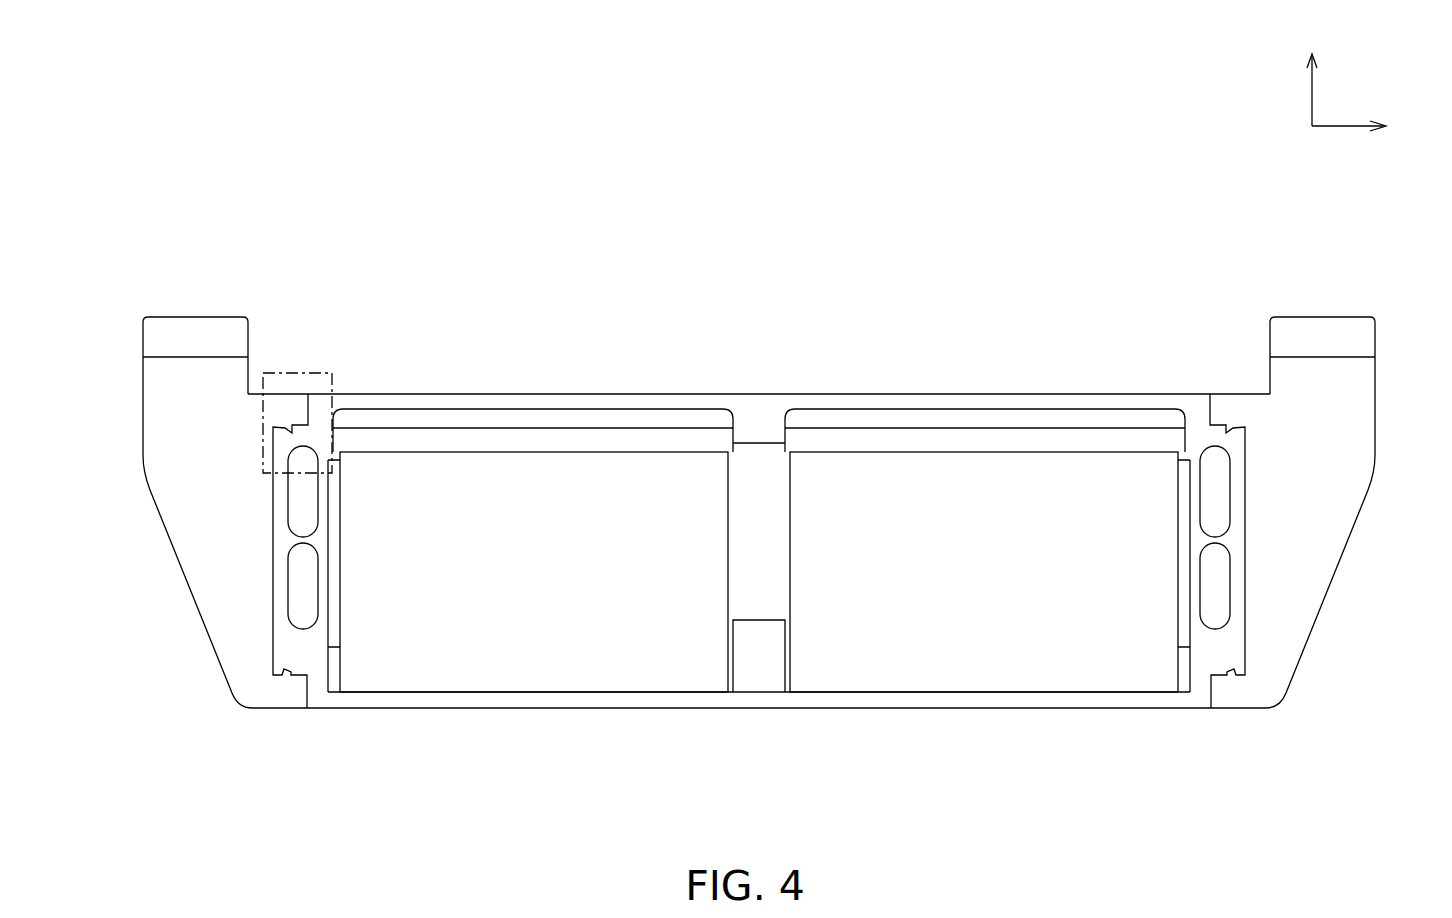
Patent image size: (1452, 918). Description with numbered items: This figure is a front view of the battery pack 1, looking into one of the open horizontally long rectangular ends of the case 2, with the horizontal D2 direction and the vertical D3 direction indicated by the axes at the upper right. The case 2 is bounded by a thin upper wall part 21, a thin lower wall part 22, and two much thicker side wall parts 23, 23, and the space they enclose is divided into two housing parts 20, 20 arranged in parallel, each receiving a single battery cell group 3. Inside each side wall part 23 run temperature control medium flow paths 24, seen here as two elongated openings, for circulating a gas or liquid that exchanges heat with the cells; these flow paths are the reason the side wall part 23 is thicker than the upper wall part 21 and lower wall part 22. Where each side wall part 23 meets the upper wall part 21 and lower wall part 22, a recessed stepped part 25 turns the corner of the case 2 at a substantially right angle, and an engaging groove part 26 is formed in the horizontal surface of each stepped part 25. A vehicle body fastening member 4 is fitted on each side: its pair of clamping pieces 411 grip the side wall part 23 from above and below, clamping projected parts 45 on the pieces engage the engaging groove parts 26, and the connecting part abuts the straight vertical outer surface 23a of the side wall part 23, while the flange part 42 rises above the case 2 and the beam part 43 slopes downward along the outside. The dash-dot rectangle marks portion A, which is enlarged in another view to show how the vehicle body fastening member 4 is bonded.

The battery pack 1 is at (798, 152).
The case 2 is at (762, 364).
The single battery cell group 3 is at (759, 552).
The vehicle body fastening member 4 is at (760, 488).
The housing part 20 is at (553, 408).
The upper wall part 21 is at (955, 393).
The lower wall part 22 is at (858, 709).
The side wall part 23 is at (758, 562).
The outer surface of the side wall part 23a is at (272, 505).
The temperature control medium flow path 24 is at (296, 525).
The stepped part 25 is at (293, 724).
The engaging groove part 26 is at (283, 690).
The flange part 42 is at (142, 365).
The beam part 43 is at (172, 563).
The clamping projected part 45 is at (317, 690).
The clamping piece 411 is at (265, 710).
The portion A is at (340, 388).
The D2 direction D2 is at (1368, 126).
The D3 direction D3 is at (1312, 75).